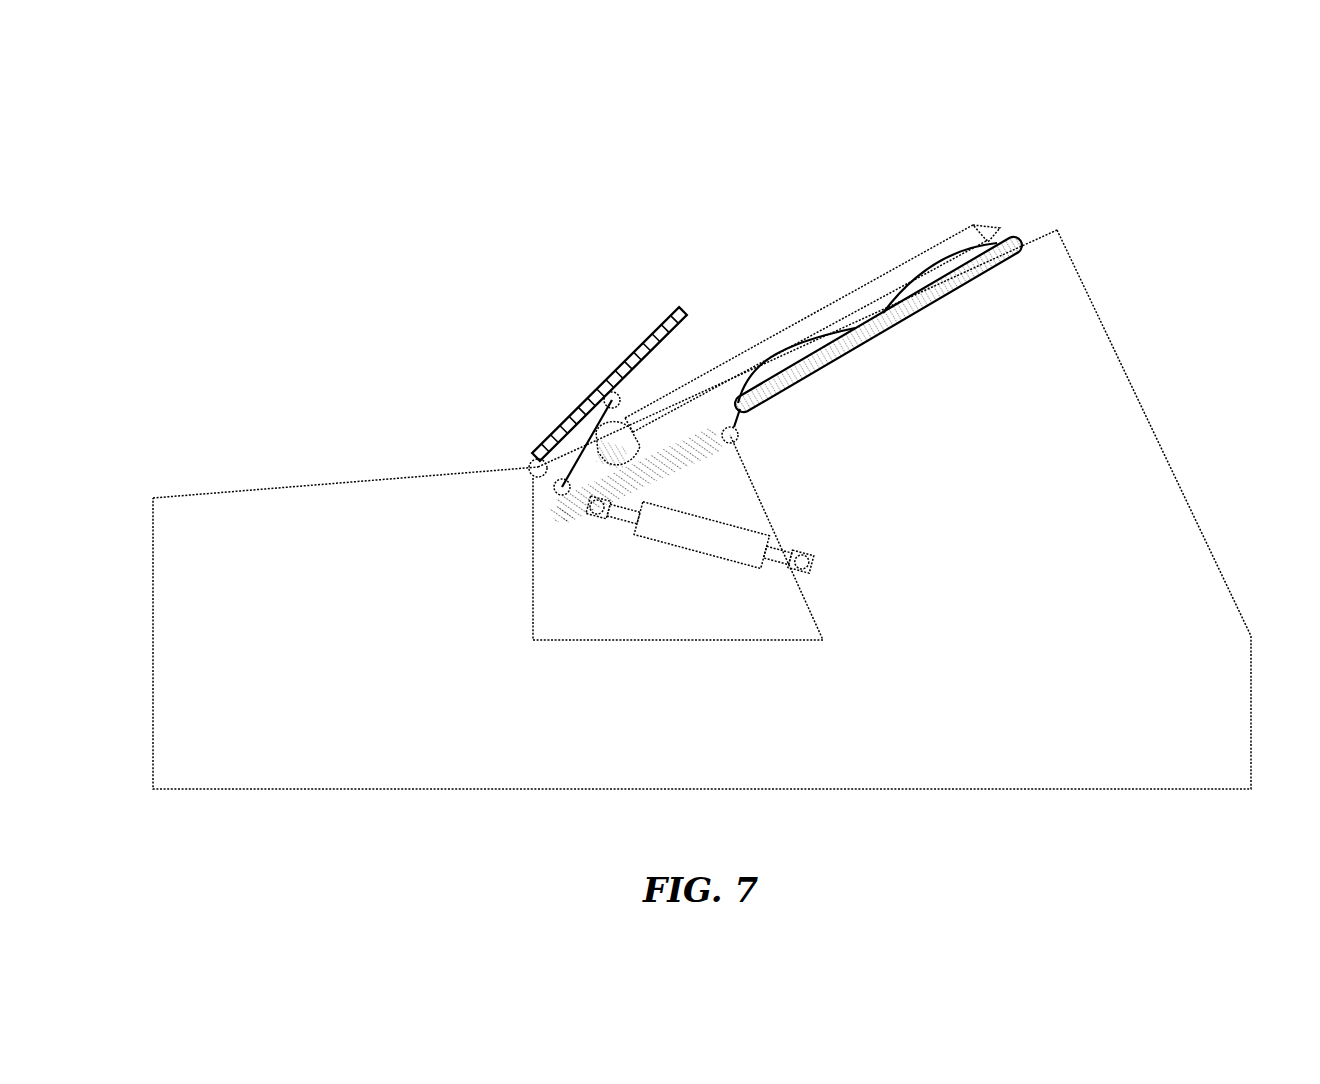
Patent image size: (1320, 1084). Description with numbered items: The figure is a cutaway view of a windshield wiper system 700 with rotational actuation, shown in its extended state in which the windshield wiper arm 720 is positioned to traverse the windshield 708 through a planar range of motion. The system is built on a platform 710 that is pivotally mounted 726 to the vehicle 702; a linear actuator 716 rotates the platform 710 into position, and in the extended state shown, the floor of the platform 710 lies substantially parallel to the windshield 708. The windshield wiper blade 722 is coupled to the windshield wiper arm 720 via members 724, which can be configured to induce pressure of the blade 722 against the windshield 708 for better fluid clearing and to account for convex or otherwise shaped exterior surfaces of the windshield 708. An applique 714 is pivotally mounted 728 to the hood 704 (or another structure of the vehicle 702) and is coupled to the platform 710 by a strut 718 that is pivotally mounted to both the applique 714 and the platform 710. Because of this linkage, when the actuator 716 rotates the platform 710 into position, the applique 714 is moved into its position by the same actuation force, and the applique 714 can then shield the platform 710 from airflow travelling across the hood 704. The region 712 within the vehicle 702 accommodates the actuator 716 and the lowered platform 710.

The windshield wiper system 700 is at (713, 145).
The vehicle 702 is at (303, 709).
The hood 704 is at (350, 478).
The windshield 708 is at (1043, 238).
The platform 710 is at (700, 473).
The recess 712 is at (597, 607).
The applique 714 is at (648, 335).
The linear actuator 716 is at (722, 548).
The strut 718 is at (576, 456).
The windshield wiper arm 720 is at (812, 309).
The windshield wiper blade 722 is at (942, 298).
The members 724 is at (982, 247).
The pivotal mount 726 is at (738, 437).
The pivotal mount 728 is at (537, 459).